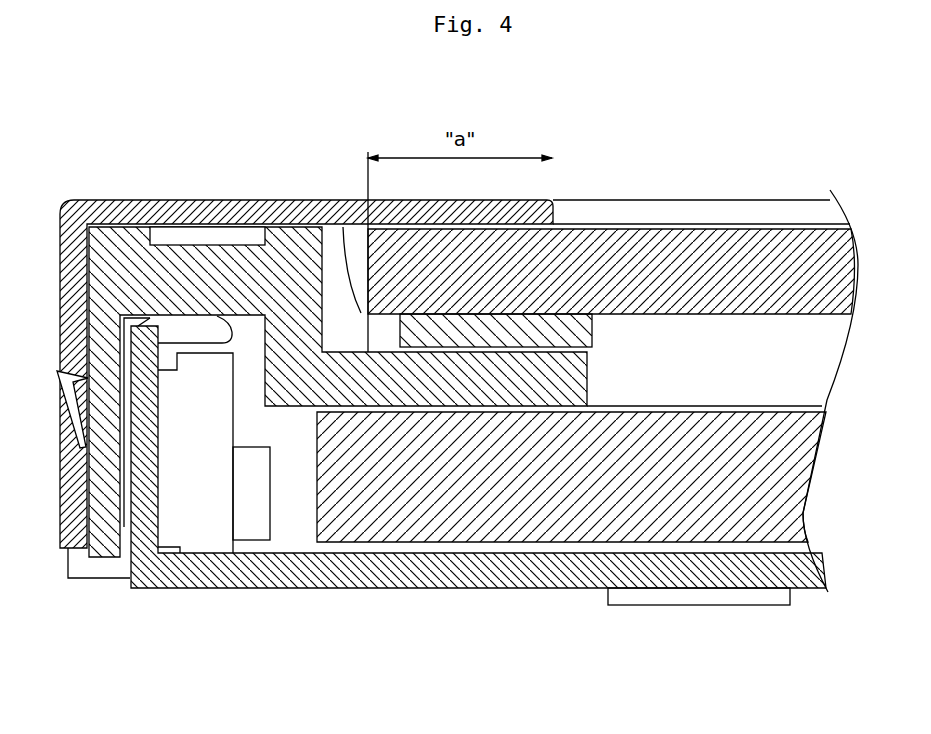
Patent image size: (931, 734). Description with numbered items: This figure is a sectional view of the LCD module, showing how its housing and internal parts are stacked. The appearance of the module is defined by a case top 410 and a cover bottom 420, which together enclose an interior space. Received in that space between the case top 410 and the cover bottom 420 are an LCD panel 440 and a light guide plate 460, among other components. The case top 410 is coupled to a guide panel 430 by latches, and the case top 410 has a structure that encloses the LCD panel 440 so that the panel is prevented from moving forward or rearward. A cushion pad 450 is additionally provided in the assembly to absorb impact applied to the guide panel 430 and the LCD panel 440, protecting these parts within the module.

The case top 410 is at (530, 200).
The cover bottom 420 is at (430, 588).
The guide panel 430 is at (108, 540).
The LCD panel 440 is at (672, 258).
The cushion pad 450 is at (535, 327).
The light guide plate 460 is at (590, 483).